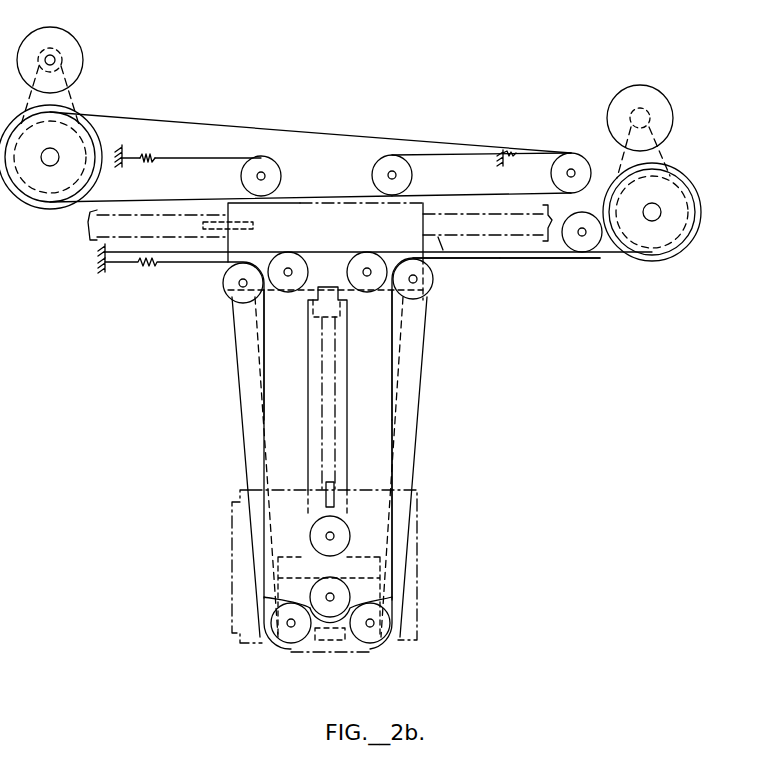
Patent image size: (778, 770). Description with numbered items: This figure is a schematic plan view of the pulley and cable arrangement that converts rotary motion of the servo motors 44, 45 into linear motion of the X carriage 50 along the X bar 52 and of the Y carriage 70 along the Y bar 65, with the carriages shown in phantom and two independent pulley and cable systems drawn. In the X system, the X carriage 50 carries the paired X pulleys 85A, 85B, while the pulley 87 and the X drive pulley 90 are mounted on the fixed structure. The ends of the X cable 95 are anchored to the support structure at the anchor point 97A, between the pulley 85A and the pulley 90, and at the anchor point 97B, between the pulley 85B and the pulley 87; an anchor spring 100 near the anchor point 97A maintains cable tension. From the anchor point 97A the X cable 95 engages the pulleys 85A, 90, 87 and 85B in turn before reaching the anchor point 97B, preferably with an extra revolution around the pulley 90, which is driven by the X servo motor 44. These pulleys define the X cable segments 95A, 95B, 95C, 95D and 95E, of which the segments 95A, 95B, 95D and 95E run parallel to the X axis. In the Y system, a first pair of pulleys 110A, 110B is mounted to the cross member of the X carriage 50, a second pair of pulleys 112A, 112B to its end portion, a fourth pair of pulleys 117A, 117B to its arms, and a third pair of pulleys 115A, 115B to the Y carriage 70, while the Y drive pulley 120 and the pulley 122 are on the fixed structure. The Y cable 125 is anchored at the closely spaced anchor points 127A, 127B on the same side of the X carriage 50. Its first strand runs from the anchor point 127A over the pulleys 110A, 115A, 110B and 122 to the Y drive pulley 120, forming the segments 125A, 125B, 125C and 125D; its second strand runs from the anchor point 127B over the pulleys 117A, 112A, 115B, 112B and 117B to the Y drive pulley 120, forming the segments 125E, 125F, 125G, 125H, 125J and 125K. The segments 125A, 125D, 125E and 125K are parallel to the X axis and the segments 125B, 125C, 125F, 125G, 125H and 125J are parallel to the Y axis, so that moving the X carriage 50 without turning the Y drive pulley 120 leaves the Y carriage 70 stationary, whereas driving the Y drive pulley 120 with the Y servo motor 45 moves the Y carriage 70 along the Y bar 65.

The X servo motor 44 is at (78, 52).
The Y servo motor 45 is at (668, 108).
The X carriage 50 is at (400, 390).
The X bar 52 is at (441, 242).
The Y bar 65 is at (327, 428).
The Y carriage 70 is at (337, 500).
The X pulley 85A is at (272, 148).
The X pulley 85B is at (372, 175).
The pulley 87 is at (570, 158).
The X drive pulley 90 is at (92, 134).
The X cable 95 is at (310, 150).
The X cable segment 95A is at (185, 157).
The X cable segment 95B is at (170, 200).
The X cable segment 95C is at (373, 135).
The X cable segment 95D is at (425, 196).
The X cable segment 95E is at (390, 150).
The anchor point 97A is at (125, 146).
The anchor point 97B is at (504, 172).
The anchor spring 100 is at (150, 163).
The pulley 110A is at (290, 252).
The pulley 110B is at (363, 252).
The pulley 112A is at (288, 636).
The pulley 112B is at (380, 622).
The pulley 115A is at (340, 535).
The pulley 115B is at (330, 610).
The pulley 117A is at (232, 296).
The pulley 117B is at (425, 290).
The Y drive pulley 120 is at (680, 212).
The pulley 122 is at (574, 245).
The Y cable 125 is at (168, 262).
The Y cable segment 125A is at (232, 255).
The Y cable segment 125B is at (308, 360).
The Y cable segment 125C is at (348, 338).
The Y cable segment 125D is at (413, 252).
The Y cable segment 125E is at (222, 263).
The Y cable segment 125F is at (262, 323).
The Y cable segment 125G is at (305, 610).
The Y cable segment 125H is at (355, 605).
The Y cable segment 125J is at (392, 453).
The Y cable segment 125K is at (500, 252).
The anchor point 127A is at (105, 252).
The anchor point 127B is at (110, 268).